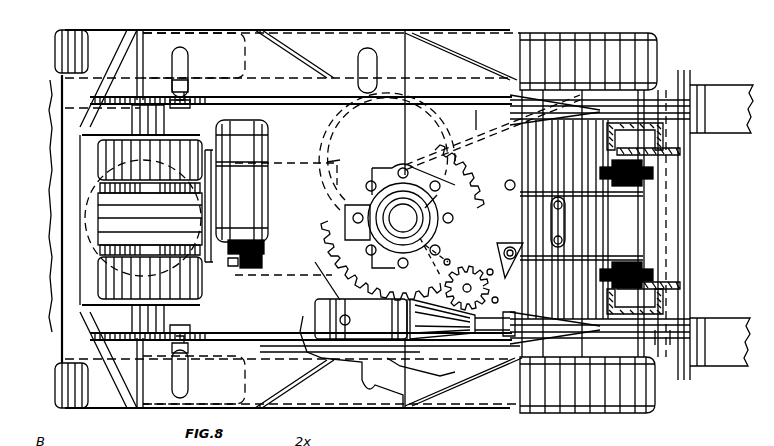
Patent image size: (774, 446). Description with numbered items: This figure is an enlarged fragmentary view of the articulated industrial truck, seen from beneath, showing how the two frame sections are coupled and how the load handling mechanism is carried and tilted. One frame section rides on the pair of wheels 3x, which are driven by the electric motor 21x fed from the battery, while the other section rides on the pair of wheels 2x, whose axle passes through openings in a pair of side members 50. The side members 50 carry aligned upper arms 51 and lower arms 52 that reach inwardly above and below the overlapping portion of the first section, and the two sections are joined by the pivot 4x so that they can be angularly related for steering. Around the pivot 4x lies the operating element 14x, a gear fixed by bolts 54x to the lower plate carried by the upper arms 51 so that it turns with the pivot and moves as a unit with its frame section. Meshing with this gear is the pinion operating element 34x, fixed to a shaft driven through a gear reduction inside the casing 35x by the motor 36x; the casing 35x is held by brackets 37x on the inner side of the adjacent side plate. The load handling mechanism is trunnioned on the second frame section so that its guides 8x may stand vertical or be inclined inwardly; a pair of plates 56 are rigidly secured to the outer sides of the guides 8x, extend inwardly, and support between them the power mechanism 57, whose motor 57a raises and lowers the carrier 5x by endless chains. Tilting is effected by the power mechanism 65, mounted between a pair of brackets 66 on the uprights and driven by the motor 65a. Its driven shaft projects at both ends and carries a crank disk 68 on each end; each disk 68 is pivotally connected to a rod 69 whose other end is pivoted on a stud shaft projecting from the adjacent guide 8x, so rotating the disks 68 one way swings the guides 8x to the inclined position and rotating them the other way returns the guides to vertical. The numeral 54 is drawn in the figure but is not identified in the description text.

The upper arms 51 is at (485, 395).
The wheels 3x is at (56, 44).
The crank disk 68 is at (120, 98).
The brackets 66 is at (128, 136).
The power mechanism 65 is at (167, 219).
The motor 65a is at (300, 143).
The bolts 54x is at (405, 267).
The drive gear 54 is at (401, 196).
The operating element 14x is at (336, 262).
The motor 36x is at (318, 293).
The casing 35x is at (439, 250).
The pivot 4x is at (415, 215).
The brackets 37x is at (468, 378).
The power mechanism 57 is at (510, 229).
The lower arms 52 is at (445, 150).
The motor 57a is at (475, 119).
The electric motor 21x is at (333, 160).
The rod 69 is at (345, 103).
The operating element 34x is at (458, 385).
The wheels 2x is at (580, 412).
The plates 56 is at (602, 355).
The side members 50 is at (655, 105).
The carrier 5x is at (735, 320).
The guides 8x is at (662, 345).